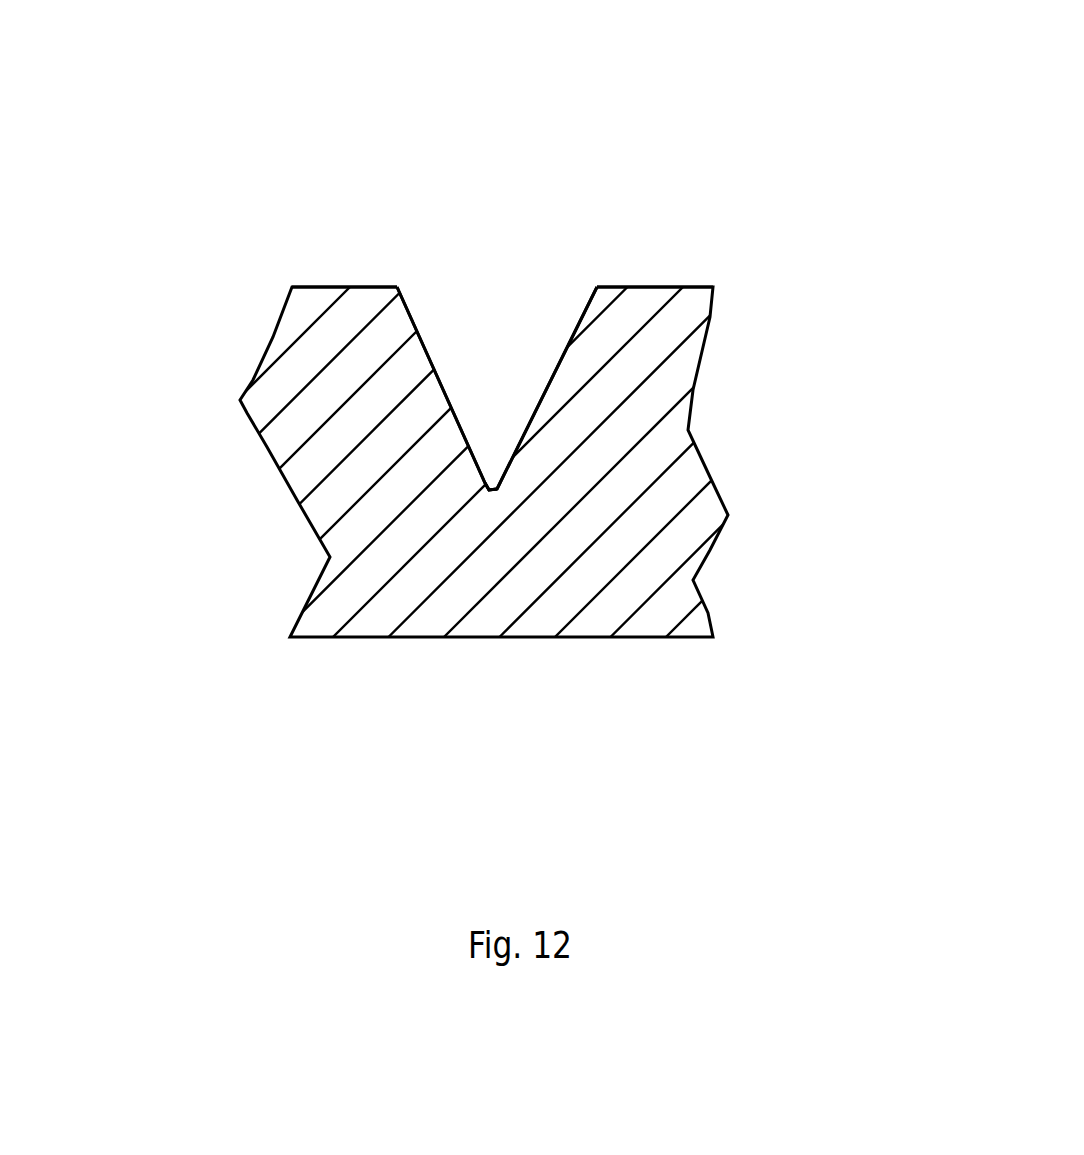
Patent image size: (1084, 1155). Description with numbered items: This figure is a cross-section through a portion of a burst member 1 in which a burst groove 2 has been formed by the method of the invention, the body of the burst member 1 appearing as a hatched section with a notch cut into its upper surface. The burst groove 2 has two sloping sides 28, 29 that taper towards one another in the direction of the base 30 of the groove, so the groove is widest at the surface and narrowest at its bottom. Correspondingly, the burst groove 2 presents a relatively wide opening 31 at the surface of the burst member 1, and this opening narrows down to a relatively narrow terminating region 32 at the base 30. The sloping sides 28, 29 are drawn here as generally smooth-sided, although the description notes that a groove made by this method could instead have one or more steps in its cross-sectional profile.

The burst member 1 is at (662, 582).
The burst groove 2 is at (498, 382).
The sloping side 28 is at (560, 382).
The sloping side 29 is at (425, 360).
The base of the groove 30 is at (490, 494).
The opening 31 is at (483, 315).
The terminating region 32 is at (493, 445).